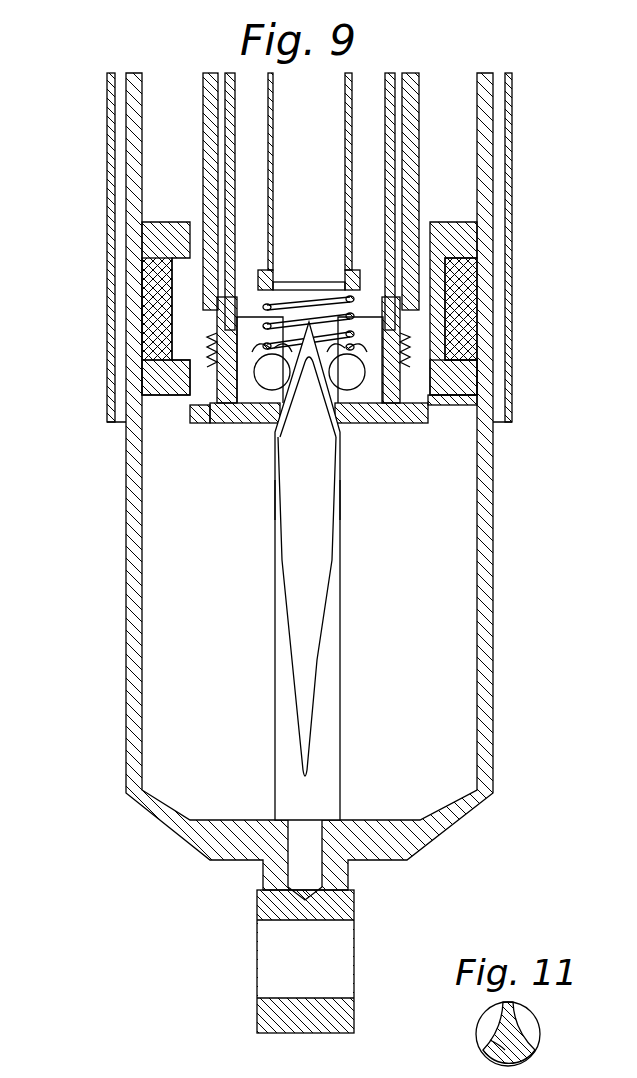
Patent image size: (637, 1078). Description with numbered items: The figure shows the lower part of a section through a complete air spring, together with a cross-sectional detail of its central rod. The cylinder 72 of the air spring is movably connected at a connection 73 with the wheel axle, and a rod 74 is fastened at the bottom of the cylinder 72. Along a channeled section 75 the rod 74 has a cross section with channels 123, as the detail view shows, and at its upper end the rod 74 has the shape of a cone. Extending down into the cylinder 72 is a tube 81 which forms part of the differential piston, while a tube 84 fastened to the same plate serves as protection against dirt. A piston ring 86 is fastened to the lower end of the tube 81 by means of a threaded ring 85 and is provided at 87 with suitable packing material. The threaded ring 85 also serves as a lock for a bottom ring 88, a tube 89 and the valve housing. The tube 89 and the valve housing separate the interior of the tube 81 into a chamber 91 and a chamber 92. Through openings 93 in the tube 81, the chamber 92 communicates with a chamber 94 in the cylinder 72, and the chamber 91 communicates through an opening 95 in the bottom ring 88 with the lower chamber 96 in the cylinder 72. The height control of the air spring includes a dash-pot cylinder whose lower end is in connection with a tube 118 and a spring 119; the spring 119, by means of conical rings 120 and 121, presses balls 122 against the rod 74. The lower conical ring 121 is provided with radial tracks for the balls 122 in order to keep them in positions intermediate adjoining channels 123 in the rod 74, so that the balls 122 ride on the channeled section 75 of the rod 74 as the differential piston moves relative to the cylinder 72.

In FIG. 9, the cylinder 72 is at (480, 598).
In FIG. 9, the connection to wheel axle 73 is at (257, 1003).
In FIG. 9, the rod 74 is at (305, 571).
In FIG. 11, the rod 74 is at (522, 1015).
In FIG. 9, the channeled section of rod 75 is at (268, 475).
In FIG. 9, the tube 81 is at (412, 110).
In FIG. 9, the protective tube 84 is at (512, 102).
In FIG. 9, the threaded ring 85 is at (440, 418).
In FIG. 9, the piston ring 86 is at (470, 383).
In FIG. 9, the packing material 87 is at (470, 285).
In FIG. 9, the bottom ring 88 is at (365, 423).
In FIG. 9, the tube 89 is at (392, 152).
In FIG. 9, the chamber 91 is at (248, 102).
In FIG. 9, the chamber 92 is at (223, 130).
In FIG. 9, the openings 93 is at (210, 273).
In FIG. 9, the chamber 94 is at (167, 160).
In FIG. 9, the opening 95 is at (262, 422).
In FIG. 9, the lower chamber 96 is at (157, 550).
In FIG. 9, the tube 118 is at (273, 90).
In FIG. 9, the spring 119 is at (286, 288).
In FIG. 9, the conical ring 120 is at (215, 340).
In FIG. 9, the conical ring 121 is at (200, 417).
In FIG. 9, the balls 122 is at (262, 372).
In FIG. 9, the channels 123 is at (312, 553).
In FIG. 11, the channels 123 is at (490, 1040).